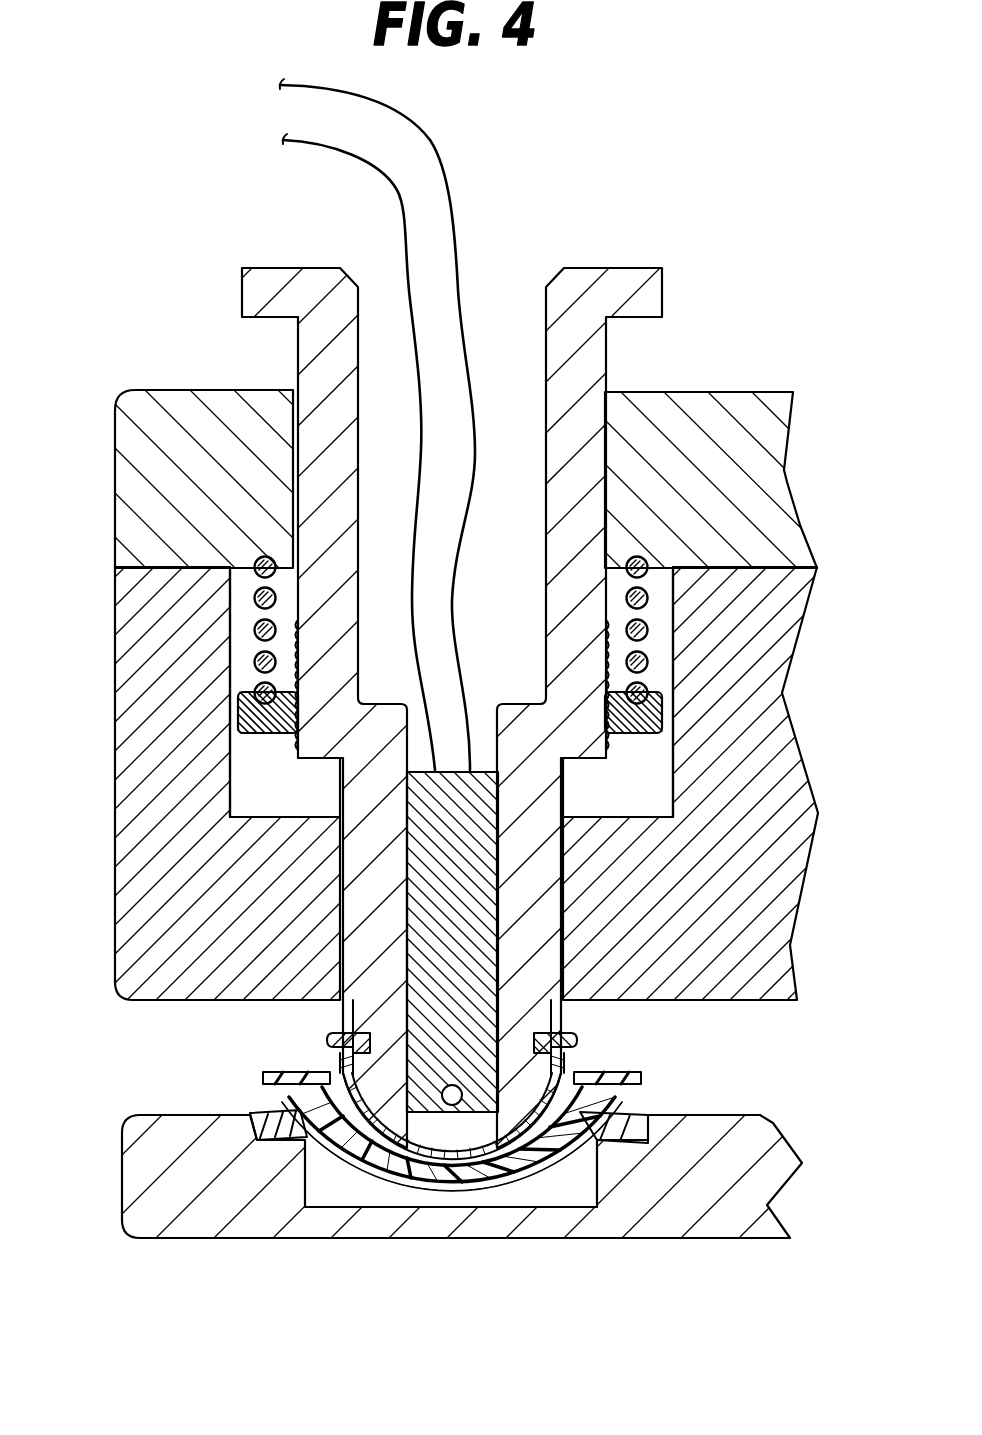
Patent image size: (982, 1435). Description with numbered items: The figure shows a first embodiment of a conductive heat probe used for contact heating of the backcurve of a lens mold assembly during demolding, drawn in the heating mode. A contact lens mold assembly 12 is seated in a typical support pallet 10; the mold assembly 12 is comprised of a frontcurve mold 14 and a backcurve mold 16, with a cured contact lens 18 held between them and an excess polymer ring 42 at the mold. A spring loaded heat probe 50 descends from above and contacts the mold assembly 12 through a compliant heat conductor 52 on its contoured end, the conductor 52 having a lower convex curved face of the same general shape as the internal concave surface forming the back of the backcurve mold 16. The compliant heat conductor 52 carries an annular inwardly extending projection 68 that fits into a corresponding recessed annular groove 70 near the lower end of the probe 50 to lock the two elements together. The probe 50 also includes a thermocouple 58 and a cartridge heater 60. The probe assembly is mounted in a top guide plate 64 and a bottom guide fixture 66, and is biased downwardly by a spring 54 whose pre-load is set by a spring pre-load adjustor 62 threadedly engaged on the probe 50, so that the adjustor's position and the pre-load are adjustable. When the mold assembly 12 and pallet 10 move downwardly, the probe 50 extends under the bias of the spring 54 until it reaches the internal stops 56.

The support pallet 10 is at (760, 1240).
The contact lens mold assembly 12 is at (730, 1068).
The frontcurve mold 14 is at (263, 1078).
The backcurve mold 16 is at (570, 1130).
The cured contact lens 18 is at (390, 1153).
The excess polymer ring 42 is at (597, 1100).
The heat probe 50 is at (607, 360).
The compliant heat conductor 52 is at (340, 1063).
The spring 54 is at (262, 600).
The internal stops 56 is at (307, 817).
The thermocouple 58 is at (457, 1100).
The cartridge heater 60 is at (428, 898).
The spring pre-load adjustor 62 is at (664, 709).
The top guide plate 64 is at (190, 432).
The bottom guide fixture 66 is at (733, 843).
The annular inwardly extending projection 68 is at (357, 1033).
The recessed annular groove 70 is at (573, 1047).